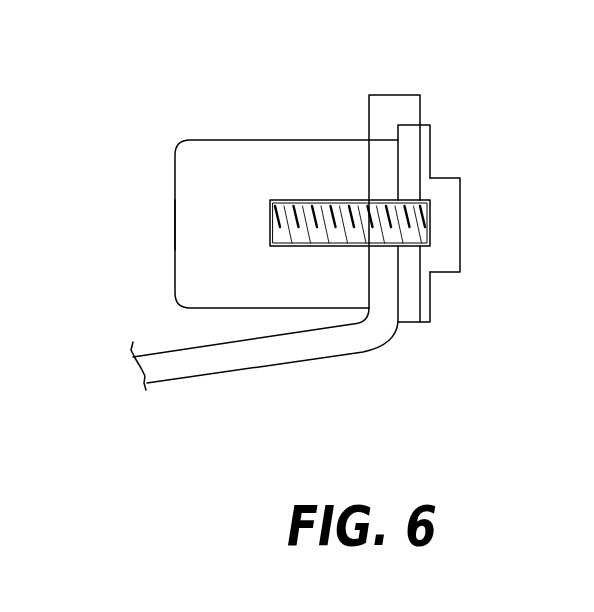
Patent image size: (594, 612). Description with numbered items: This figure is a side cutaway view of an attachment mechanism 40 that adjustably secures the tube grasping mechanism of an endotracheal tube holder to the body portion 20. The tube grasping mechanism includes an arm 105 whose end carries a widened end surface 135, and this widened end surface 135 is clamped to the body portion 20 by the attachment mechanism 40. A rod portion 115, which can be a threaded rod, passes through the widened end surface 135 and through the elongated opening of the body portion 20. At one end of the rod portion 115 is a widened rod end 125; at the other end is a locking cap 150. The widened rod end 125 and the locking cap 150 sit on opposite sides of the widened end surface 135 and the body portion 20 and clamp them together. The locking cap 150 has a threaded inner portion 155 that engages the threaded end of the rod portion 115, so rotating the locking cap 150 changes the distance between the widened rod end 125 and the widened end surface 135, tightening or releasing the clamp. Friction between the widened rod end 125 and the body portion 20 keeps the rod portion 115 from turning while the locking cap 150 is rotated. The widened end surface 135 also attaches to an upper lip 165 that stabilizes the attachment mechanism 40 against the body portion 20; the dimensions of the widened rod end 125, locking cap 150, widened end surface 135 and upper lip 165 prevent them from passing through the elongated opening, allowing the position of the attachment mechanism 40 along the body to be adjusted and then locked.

The attachment mechanism 40 is at (186, 103).
The upper lip 165 is at (393, 94).
The body portion 20 is at (424, 124).
The widened end surface 135 is at (378, 163).
The threaded inner portion 155 is at (257, 223).
The locking cap 150 is at (177, 253).
The rod portion 115 is at (337, 237).
The widened rod end 125 is at (460, 240).
The arm 105 is at (203, 377).